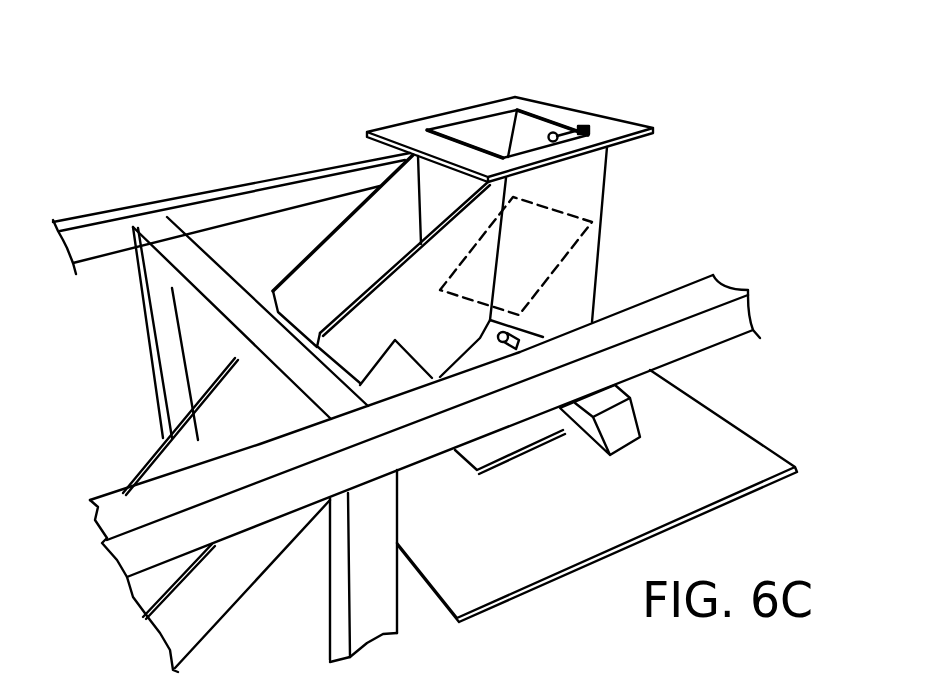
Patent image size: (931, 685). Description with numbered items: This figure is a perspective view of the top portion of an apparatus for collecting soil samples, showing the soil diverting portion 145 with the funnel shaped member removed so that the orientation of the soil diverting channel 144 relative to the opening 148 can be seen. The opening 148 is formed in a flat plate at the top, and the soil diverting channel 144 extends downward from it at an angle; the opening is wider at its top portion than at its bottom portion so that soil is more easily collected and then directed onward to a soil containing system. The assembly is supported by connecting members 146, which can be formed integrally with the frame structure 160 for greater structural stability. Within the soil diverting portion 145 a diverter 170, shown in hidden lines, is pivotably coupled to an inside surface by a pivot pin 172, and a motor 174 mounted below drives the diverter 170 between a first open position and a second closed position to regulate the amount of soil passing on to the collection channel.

The soil diverting channel 144 is at (353, 338).
The soil diverting portion 145 is at (528, 103).
The connecting members 146 is at (90, 227).
The opening 148 is at (478, 137).
The frame structure 160 is at (363, 583).
The diverter 170 is at (567, 253).
The pivot pin 172 is at (508, 338).
The motor 174 is at (623, 420).